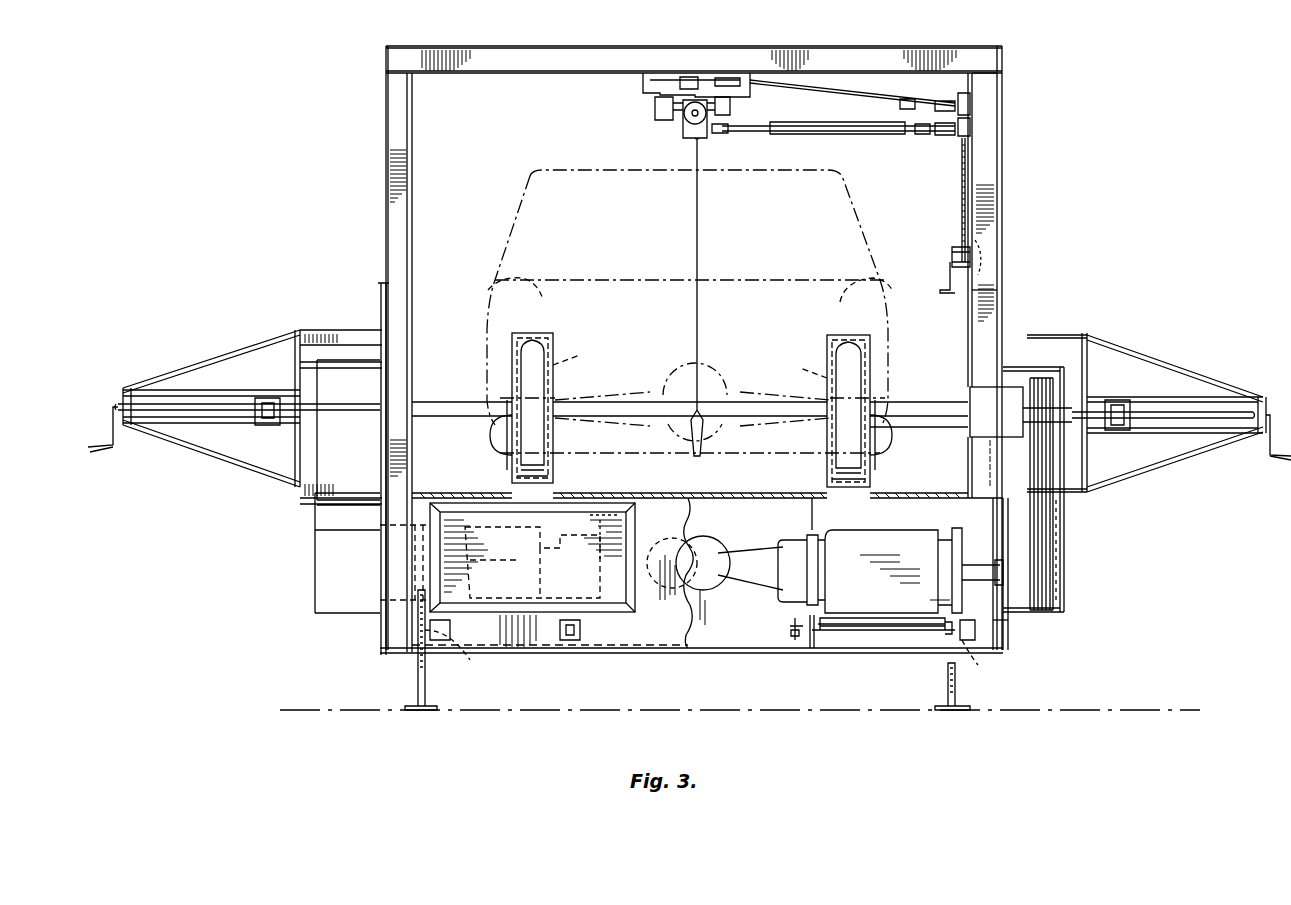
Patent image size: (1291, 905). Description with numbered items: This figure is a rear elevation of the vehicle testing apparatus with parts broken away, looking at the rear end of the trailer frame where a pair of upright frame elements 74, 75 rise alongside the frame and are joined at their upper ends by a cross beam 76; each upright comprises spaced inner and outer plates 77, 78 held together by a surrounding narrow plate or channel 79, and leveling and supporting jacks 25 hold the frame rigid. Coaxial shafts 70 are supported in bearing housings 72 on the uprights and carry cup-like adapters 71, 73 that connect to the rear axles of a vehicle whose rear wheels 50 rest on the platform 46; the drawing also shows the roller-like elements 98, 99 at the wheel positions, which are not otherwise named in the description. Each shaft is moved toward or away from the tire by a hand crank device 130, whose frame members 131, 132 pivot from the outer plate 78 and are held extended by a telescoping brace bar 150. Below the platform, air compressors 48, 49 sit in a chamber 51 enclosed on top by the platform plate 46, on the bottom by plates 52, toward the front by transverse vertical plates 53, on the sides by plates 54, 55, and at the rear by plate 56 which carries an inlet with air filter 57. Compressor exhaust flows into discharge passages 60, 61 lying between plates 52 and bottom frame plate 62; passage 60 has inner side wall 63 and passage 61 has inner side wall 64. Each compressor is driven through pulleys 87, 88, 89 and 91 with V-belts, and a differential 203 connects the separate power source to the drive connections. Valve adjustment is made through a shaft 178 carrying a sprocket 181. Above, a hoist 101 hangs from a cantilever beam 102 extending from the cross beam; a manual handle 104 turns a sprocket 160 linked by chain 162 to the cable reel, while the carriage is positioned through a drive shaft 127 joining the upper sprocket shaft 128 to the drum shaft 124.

The leveling and supporting jack 25 is at (418, 676).
The platform plate 46 is at (778, 493).
The air compressor 48 is at (878, 592).
The air compressor 49 is at (548, 526).
The rear wheel 50 is at (690, 360).
The chamber 51 is at (756, 532).
The bottom plate 52 is at (707, 654).
The transverse vertical plate 53 is at (811, 520).
The side plate 54 is at (380, 636).
The side plate 55 is at (1004, 640).
The rear wall plate 56 is at (650, 636).
The air filter 57 is at (622, 530).
The discharge passage 60 is at (888, 650).
The discharge passage 61 is at (520, 638).
The bottom frame plate 62 is at (752, 651).
The inner side wall 63 is at (828, 634).
The inner side wall 64 is at (574, 640).
The shaft 70 is at (452, 402).
The cup-like adapter 71 is at (872, 465).
The bearing housing 72 is at (1010, 384).
The cup-like adapter 73 is at (512, 470).
The upright frame element 74 is at (1006, 212).
The upright frame element 75 is at (386, 152).
The cross beam 76 is at (570, 46).
The inner plate 77 is at (968, 292).
The outer plate 78 is at (1003, 178).
The surrounding plate or channel 79 is at (988, 270).
The pulley 87 is at (1040, 392).
The pulley 88 is at (1058, 586).
The pulley 89 is at (1004, 525).
The pulley 91 is at (1048, 556).
The right roller 98 is at (848, 335).
The left roller 99 is at (535, 333).
The hoist 101 is at (680, 126).
The beam 102 is at (640, 91).
The manual handle 104 is at (948, 280).
The drum shaft 124 is at (842, 78).
The drive shaft 127 is at (826, 134).
The upper sprocket shaft 128 is at (970, 128).
The hand crank device 130 is at (115, 446).
The longitudinally extending member 131 is at (236, 462).
The longitudinally extending member 132 is at (218, 357).
The brace bar 150 is at (226, 416).
The sprocket 160 is at (960, 248).
The chain 162 is at (962, 180).
The shaft 178 is at (812, 640).
The sprocket 181 is at (790, 630).
The differential 203 is at (706, 578).